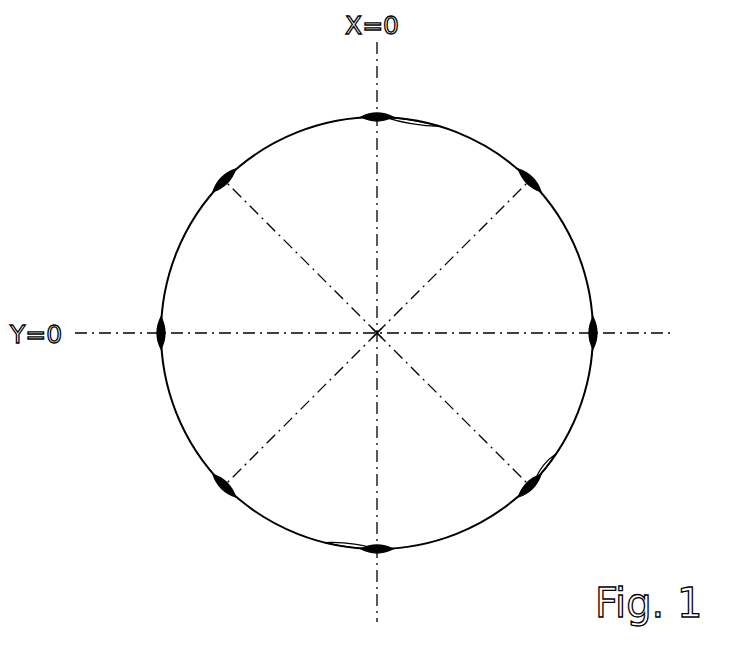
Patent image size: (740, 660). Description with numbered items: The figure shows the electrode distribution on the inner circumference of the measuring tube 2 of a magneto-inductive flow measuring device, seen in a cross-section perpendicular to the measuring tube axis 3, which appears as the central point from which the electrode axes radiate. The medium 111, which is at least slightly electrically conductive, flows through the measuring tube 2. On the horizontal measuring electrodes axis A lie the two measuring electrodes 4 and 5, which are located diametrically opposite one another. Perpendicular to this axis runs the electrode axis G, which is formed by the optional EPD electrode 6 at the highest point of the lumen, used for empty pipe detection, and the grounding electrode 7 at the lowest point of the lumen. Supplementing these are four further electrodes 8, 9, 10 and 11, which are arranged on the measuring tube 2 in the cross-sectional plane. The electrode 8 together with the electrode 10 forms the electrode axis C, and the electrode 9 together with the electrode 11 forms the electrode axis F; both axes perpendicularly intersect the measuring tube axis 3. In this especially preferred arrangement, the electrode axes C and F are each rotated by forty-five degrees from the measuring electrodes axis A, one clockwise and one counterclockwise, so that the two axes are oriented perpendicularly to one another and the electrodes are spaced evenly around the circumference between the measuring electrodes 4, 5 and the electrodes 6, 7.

The measuring tube 2 is at (590, 272).
The measuring tube axis 3 is at (378, 330).
The measuring electrode 4 is at (596, 345).
The measuring electrode 5 is at (158, 322).
The EPD electrode 6 is at (438, 126).
The grounding electrode 7 is at (328, 544).
The other electrode 8 is at (556, 454).
The other electrode 9 is at (541, 191).
The other electrode 10 is at (229, 172).
The other electrode 11 is at (226, 498).
The medium 111 is at (475, 507).
The measuring electrodes axis A is at (494, 332).
The electrode axis C is at (482, 434).
The electrode axis F is at (484, 221).
The electrode axis G is at (377, 470).